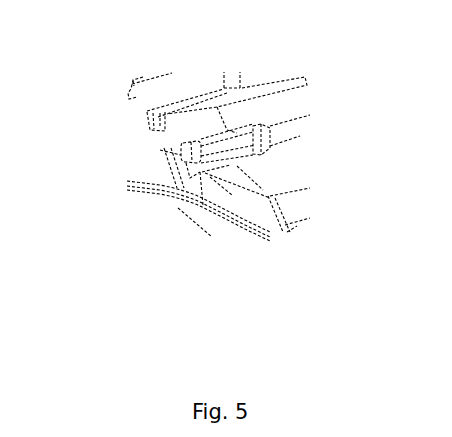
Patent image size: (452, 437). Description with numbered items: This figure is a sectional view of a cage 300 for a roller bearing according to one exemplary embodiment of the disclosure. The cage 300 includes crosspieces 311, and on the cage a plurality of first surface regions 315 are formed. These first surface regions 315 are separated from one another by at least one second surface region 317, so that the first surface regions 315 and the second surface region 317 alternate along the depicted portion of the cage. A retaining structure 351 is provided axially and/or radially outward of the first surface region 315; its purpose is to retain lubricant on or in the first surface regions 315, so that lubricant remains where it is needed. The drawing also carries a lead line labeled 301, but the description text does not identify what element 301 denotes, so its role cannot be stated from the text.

The cage 300 is at (110, 72).
The vehicle body panel 301 is at (178, 208).
The crosspieces 311 is at (353, 92).
The first surface regions 315 is at (288, 128).
The second surface region 317 is at (267, 147).
The retaining structure 351 is at (203, 152).